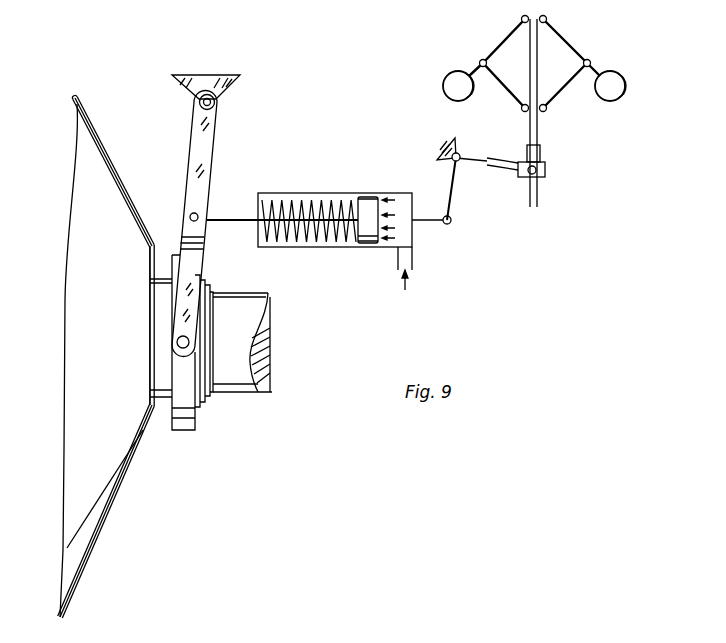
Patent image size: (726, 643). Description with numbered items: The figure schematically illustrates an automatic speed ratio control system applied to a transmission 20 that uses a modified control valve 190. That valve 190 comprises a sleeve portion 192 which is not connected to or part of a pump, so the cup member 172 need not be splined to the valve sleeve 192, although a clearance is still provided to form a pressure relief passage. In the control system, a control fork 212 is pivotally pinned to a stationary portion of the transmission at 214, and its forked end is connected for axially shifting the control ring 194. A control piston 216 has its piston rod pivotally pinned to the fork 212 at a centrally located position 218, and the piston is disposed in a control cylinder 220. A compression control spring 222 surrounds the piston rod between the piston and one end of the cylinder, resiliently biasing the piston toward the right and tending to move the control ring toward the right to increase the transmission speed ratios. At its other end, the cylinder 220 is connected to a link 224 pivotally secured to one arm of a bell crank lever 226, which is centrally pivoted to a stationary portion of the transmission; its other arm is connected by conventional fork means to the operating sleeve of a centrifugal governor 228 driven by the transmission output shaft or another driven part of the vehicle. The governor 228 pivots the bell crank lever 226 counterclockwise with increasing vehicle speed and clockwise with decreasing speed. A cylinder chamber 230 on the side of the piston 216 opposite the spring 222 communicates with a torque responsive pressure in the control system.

The transmission 20 is at (90, 108).
The cup member 172 is at (113, 170).
The control valve 190 is at (160, 405).
The sleeve portion 192 is at (162, 292).
The control ring 194 is at (195, 423).
The control fork 212 is at (211, 154).
The pivot pin location 214 is at (216, 102).
The control piston 216 is at (367, 197).
The centrally located pin position 218 is at (187, 216).
The control cylinder 220 is at (261, 193).
The compression control spring 222 is at (303, 203).
The link 224 is at (432, 223).
The bell crank lever 226 is at (453, 201).
The centrifugal governor 228 is at (540, 142).
The cylinder chamber 230 is at (397, 207).